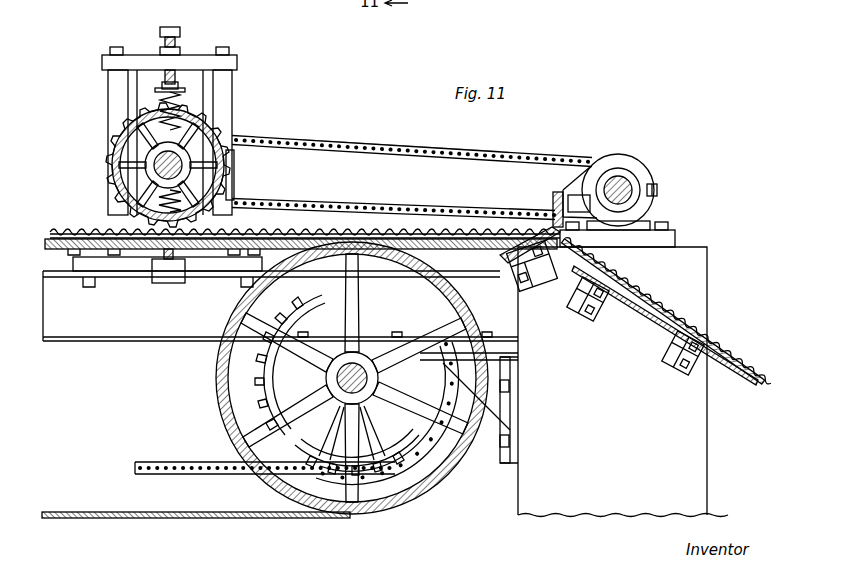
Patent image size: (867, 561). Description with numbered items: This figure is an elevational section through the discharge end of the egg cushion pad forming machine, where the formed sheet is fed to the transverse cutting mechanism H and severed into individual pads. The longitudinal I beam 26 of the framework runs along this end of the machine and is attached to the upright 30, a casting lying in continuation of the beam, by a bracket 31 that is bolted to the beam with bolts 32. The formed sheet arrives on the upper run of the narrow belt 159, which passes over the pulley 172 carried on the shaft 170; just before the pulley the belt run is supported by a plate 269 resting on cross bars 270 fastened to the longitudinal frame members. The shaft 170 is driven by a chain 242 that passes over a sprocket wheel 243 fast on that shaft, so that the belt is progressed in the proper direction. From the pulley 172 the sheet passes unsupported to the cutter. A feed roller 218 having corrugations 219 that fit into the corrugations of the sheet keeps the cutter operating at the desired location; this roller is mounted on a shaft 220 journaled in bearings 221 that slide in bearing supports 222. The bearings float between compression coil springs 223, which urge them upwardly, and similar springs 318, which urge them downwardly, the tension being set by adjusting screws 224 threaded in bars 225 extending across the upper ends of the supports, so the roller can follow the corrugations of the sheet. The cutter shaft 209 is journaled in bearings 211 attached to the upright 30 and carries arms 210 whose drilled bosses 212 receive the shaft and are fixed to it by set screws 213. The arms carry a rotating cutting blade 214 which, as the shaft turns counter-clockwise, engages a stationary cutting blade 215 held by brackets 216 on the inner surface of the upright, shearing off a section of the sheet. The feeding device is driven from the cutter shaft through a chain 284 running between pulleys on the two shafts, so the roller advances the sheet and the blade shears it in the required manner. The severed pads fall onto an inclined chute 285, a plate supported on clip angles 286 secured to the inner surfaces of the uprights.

The bars 225 is at (150, 55).
The adjusting screws 224 is at (180, 32).
The bearing supports 222 is at (116, 92).
The springs 318 is at (185, 100).
The bearings 221 is at (145, 140).
The shaft 220 is at (160, 165).
The compression coil springs 223 is at (160, 212).
The corrugations 219 is at (234, 165).
The feed roller 218 is at (234, 140).
The chain 284 is at (405, 153).
The stationary cutting blade 215 is at (516, 252).
The cutting blade 214 is at (553, 210).
The transverse cutting mechanism H is at (641, 155).
The drilled bosses 212 is at (633, 180).
The cutter shaft 209 is at (618, 182).
The arms 210 is at (576, 186).
The set screws 213 is at (658, 190).
The bearings 211 is at (678, 238).
The I beam 26 is at (86, 333).
The plate 269 is at (218, 251).
The cross bars 270 is at (164, 273).
The pulley 172 is at (412, 507).
The sprocket wheel 243 is at (276, 375).
The shaft 170 is at (354, 372).
The chain 242 is at (180, 462).
The belt 159 is at (127, 518).
The brackets 31 is at (500, 410).
The bolts 32 is at (509, 386).
The uprights 30 is at (712, 452).
The chute 285 is at (633, 306).
The brackets 216 is at (546, 288).
The clip angles 286 is at (584, 312).